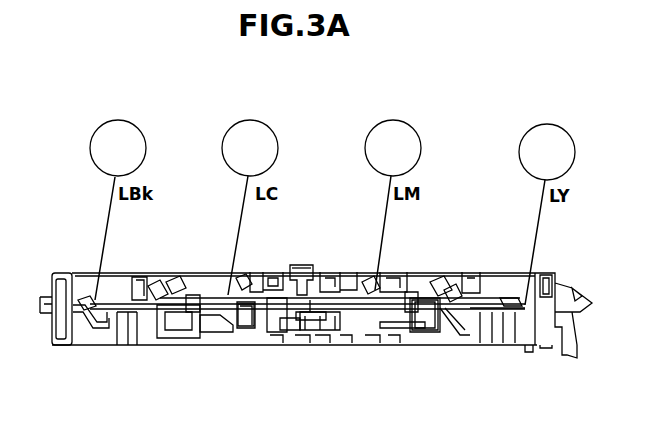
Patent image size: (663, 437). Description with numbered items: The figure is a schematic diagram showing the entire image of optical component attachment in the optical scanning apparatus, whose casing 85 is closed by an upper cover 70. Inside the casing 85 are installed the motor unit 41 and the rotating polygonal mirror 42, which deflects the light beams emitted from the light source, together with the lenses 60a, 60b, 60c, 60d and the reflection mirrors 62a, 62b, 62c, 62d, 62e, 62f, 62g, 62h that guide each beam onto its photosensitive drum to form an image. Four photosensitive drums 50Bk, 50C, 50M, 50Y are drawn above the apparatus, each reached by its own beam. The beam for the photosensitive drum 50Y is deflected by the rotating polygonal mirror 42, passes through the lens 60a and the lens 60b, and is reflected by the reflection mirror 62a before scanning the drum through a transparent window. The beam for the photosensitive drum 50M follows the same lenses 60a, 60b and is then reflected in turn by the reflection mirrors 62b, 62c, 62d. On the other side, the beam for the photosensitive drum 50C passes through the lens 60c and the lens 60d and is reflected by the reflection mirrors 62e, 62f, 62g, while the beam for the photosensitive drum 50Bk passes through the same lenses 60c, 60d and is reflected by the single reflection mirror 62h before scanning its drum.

The photosensitive drum 50Bk is at (118, 130).
The photosensitive drum 50C is at (250, 130).
The photosensitive drum 50M is at (393, 130).
The photosensitive drum 50Y is at (547, 134).
The reflection mirror 62h is at (90, 290).
The reflection mirror 62e is at (152, 292).
The reflection mirror 62f is at (170, 280).
The lens 60d is at (194, 296).
The reflection mirror 62g is at (244, 282).
The upper cover 70 is at (272, 272).
The reflection mirror 62d is at (368, 280).
The lens 60b is at (412, 294).
The reflection mirror 62c is at (440, 284).
The reflection mirror 62b is at (452, 293).
The reflection mirror 62a is at (512, 300).
The lens 60c is at (250, 326).
The motor unit 41 is at (290, 340).
The rotating polygonal mirror 42 is at (296, 340).
The lens 60a is at (360, 328).
The casing 85 is at (393, 324).